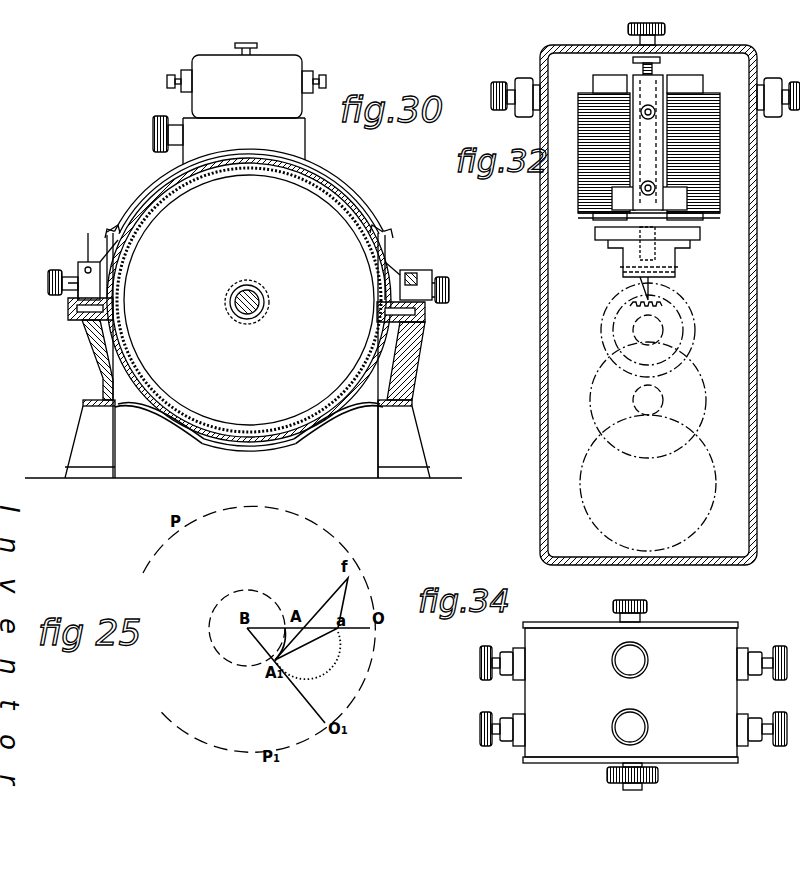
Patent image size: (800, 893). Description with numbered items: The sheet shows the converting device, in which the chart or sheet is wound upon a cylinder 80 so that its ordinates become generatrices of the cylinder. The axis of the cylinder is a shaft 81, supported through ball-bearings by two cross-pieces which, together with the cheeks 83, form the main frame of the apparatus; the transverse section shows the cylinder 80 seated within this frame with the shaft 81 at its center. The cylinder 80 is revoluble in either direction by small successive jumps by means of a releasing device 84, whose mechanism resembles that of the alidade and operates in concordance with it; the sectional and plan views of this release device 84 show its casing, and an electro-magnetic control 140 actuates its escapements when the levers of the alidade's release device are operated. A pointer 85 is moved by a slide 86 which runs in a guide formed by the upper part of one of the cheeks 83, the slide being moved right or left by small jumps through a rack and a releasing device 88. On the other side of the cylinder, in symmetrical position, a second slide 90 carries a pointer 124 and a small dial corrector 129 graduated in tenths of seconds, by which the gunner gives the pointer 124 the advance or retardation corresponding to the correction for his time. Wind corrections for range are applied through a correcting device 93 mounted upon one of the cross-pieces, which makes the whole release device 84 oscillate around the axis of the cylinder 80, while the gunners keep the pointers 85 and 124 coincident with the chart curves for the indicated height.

In FIG. 30, the cylinder 80 is at (323, 197).
In FIG. 30, the shaft 81 is at (262, 285).
In FIG. 30, the cheeks 83 is at (103, 403).
In FIG. 30, the releasing device 84 is at (246, 103).
In FIG. 32, the releasing device 84 is at (709, 283).
In FIG. 34, the releasing device 84 is at (683, 715).
In FIG. 30, the pointer 85 is at (387, 257).
In FIG. 30, the slide 86 is at (410, 272).
In FIG. 30, the releasing device 88 is at (78, 272).
In FIG. 30, the second slide 90 is at (89, 288).
In FIG. 30, the correcting device 93 is at (153, 138).
In FIG. 30, the pointer 124 is at (114, 232).
In FIG. 30, the dial corrector 129 is at (70, 300).
In FIG. 32, the electro-magnetic control 140 is at (585, 171).